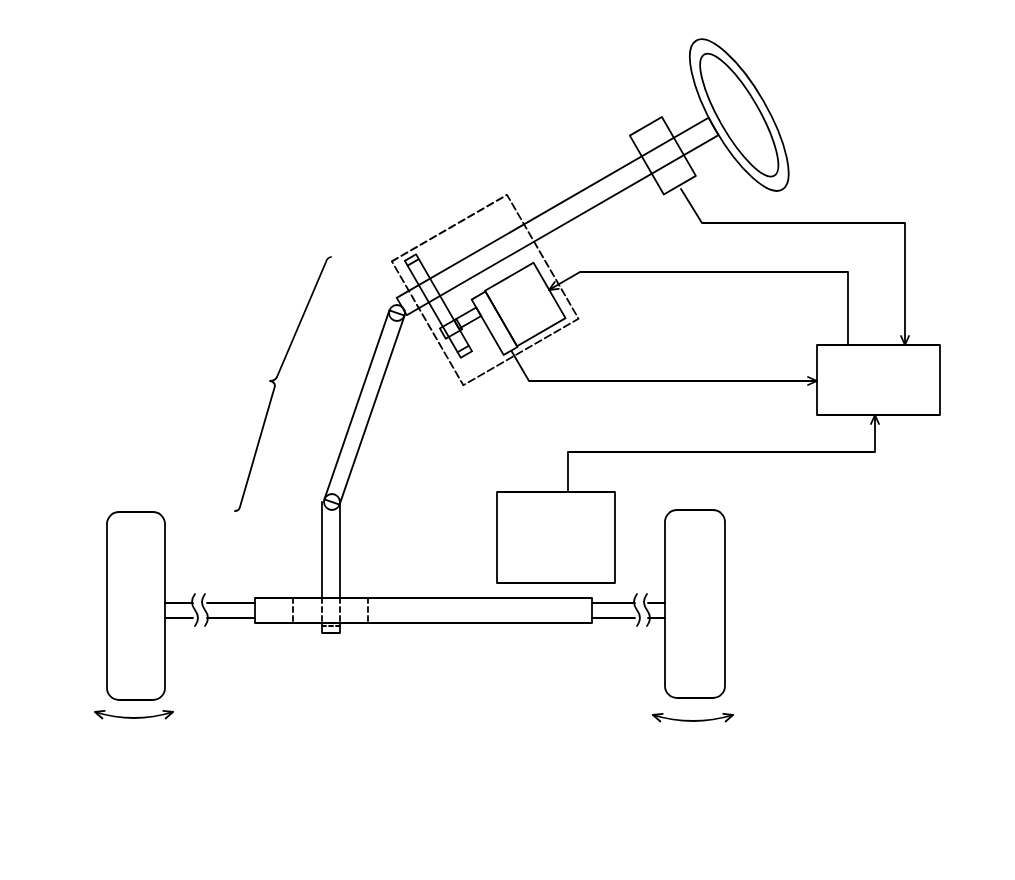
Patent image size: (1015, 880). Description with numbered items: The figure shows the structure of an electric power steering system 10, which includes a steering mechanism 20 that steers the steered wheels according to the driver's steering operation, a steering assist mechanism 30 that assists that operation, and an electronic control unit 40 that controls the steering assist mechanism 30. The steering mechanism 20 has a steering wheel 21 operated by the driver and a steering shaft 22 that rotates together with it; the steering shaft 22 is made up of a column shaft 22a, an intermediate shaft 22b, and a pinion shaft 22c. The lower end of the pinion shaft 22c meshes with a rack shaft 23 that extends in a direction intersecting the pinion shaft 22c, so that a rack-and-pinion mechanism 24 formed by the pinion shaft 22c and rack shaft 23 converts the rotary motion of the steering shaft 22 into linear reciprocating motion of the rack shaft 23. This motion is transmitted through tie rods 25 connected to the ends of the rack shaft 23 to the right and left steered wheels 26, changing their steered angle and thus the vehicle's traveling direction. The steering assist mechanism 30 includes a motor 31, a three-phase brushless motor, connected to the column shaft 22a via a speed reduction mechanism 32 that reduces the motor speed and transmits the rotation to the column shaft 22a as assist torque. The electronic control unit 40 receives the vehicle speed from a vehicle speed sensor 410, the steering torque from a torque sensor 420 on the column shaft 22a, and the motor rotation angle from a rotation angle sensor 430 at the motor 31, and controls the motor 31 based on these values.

The electric power steering system 10 is at (534, 411).
The steering mechanism 20 is at (558, 216).
The steering wheel 21 is at (765, 93).
The steering shaft 22 is at (320, 388).
The column shaft 22a is at (390, 308).
The intermediate shaft 22b is at (357, 410).
The pinion shaft 22c is at (322, 520).
The rack shaft 23 is at (420, 598).
The rack-and-pinion mechanism 24 is at (304, 567).
The tie rods 25 is at (230, 620).
The steered wheels 26 is at (107, 605).
The steering assist mechanism 30 is at (447, 228).
The motor 31 is at (567, 301).
The speed reduction mechanism 32 is at (448, 322).
The electronic control unit 40 is at (942, 380).
The vehicle speed sensor 410 is at (535, 492).
The torque sensor 420 is at (632, 128).
The rotation angle sensor 430 is at (502, 343).